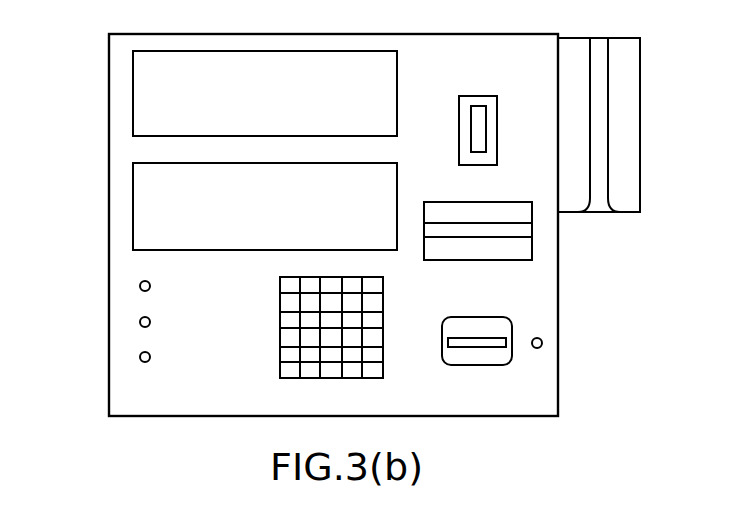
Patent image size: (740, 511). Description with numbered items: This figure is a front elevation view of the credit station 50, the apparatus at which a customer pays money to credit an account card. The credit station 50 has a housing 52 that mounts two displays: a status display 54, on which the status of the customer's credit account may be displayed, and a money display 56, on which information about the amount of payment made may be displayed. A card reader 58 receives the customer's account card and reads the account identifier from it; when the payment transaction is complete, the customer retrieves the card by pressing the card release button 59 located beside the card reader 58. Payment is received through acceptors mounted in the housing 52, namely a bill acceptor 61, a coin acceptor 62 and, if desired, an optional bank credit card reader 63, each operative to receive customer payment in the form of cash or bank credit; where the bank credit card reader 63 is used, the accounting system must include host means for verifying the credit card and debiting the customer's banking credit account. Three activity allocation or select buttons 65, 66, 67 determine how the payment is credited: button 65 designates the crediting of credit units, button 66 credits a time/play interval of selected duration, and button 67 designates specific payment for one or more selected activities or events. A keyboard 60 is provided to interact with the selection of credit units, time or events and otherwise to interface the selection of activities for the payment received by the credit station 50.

The credit station 50 is at (93, 116).
The housing 52 is at (223, 407).
The status display 54 is at (274, 106).
The money display 56 is at (274, 215).
The card reader 58 is at (498, 358).
The card release button 59 is at (541, 347).
The keyboard 60 is at (373, 372).
The bill acceptor 61 is at (522, 248).
The coin acceptor 62 is at (488, 105).
The bank credit card reader 63 is at (627, 52).
The activity allocation button 65 is at (140, 293).
The activity allocation button 66 is at (140, 327).
The activity allocation button 67 is at (140, 362).